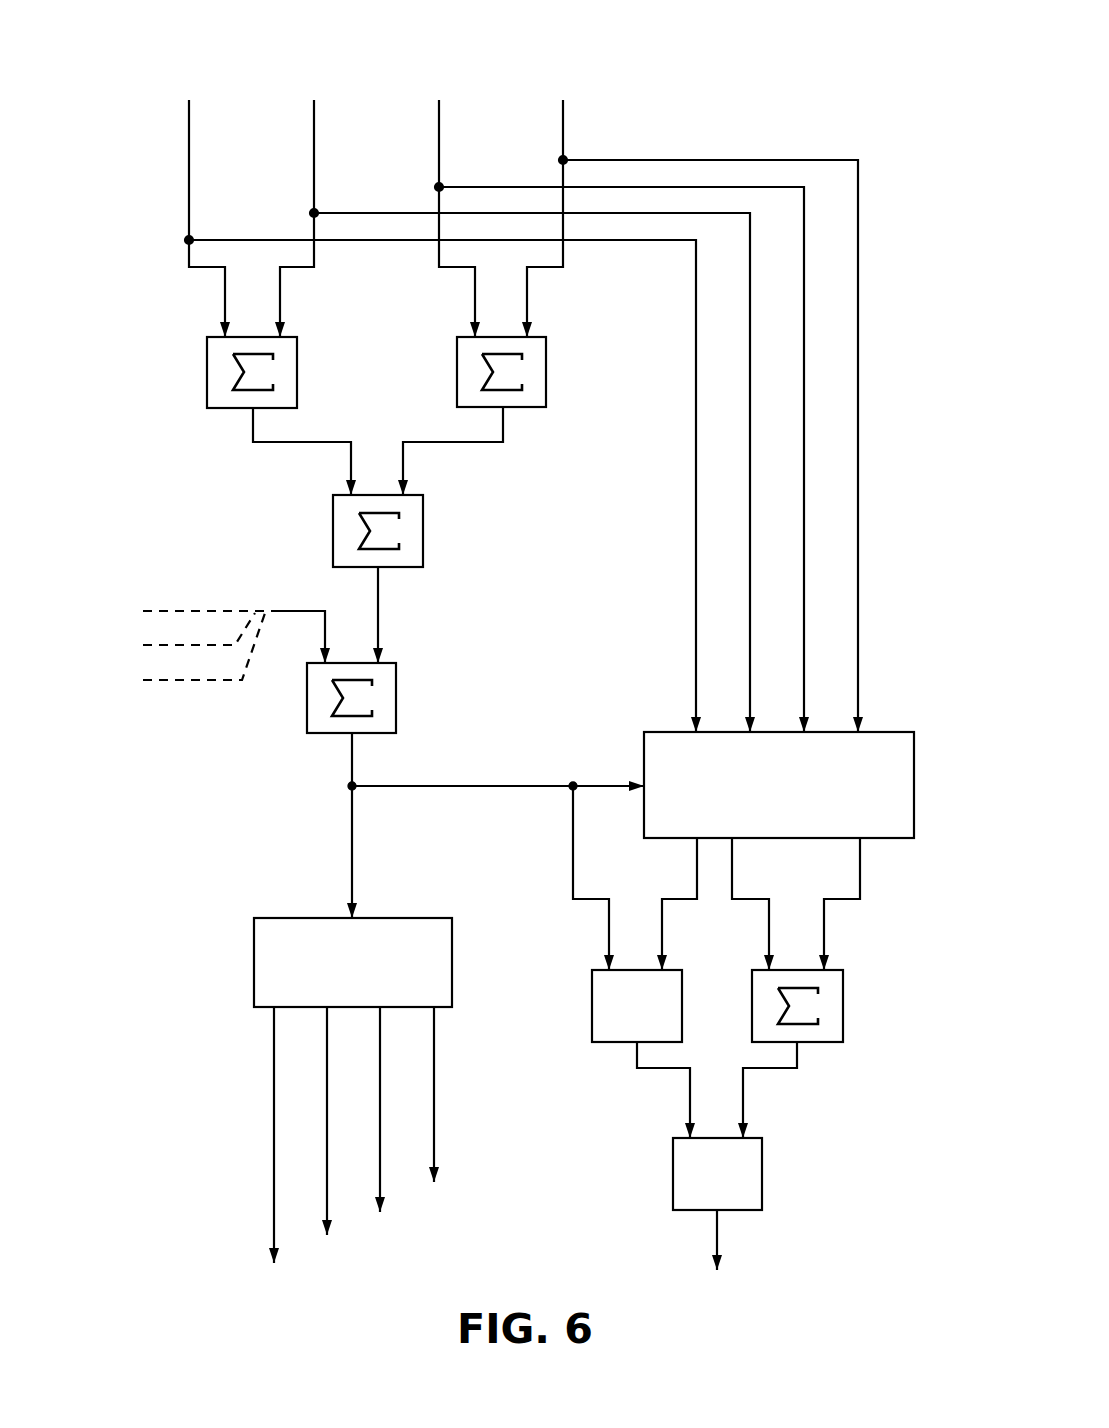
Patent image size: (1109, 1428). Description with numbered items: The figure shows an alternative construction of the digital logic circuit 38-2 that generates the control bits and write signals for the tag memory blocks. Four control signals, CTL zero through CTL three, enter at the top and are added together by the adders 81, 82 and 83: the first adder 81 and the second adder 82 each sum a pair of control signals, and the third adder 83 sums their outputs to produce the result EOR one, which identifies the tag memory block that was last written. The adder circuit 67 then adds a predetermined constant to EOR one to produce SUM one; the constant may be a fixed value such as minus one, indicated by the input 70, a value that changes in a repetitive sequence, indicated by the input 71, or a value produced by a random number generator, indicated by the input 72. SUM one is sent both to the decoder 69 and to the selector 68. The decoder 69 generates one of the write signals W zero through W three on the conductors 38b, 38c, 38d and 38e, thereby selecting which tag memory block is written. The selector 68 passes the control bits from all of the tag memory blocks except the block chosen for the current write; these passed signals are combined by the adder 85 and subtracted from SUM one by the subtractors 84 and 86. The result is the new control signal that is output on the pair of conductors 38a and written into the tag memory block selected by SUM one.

The digital logic circuit 38-2 is at (641, 55).
The adder 81 is at (207, 370).
The adder 82 is at (546, 360).
The adder 83 is at (423, 522).
The adder circuit 67 is at (396, 690).
The selector 68 is at (653, 732).
The decoder 69 is at (297, 918).
The constant input 70 is at (216, 630).
The repetitive sequence constant input 71 is at (179, 636).
The random number generator constant input 72 is at (184, 654).
The subtractor 84 is at (598, 1003).
The adder 85 is at (843, 990).
The subtractor 86 is at (762, 1147).
The pair of conductors 38a is at (717, 1236).
The conductor 38b is at (274, 1124).
The conductor 38c is at (327, 1066).
The conductor 38d is at (380, 1110).
The conductor 38e is at (434, 1062).